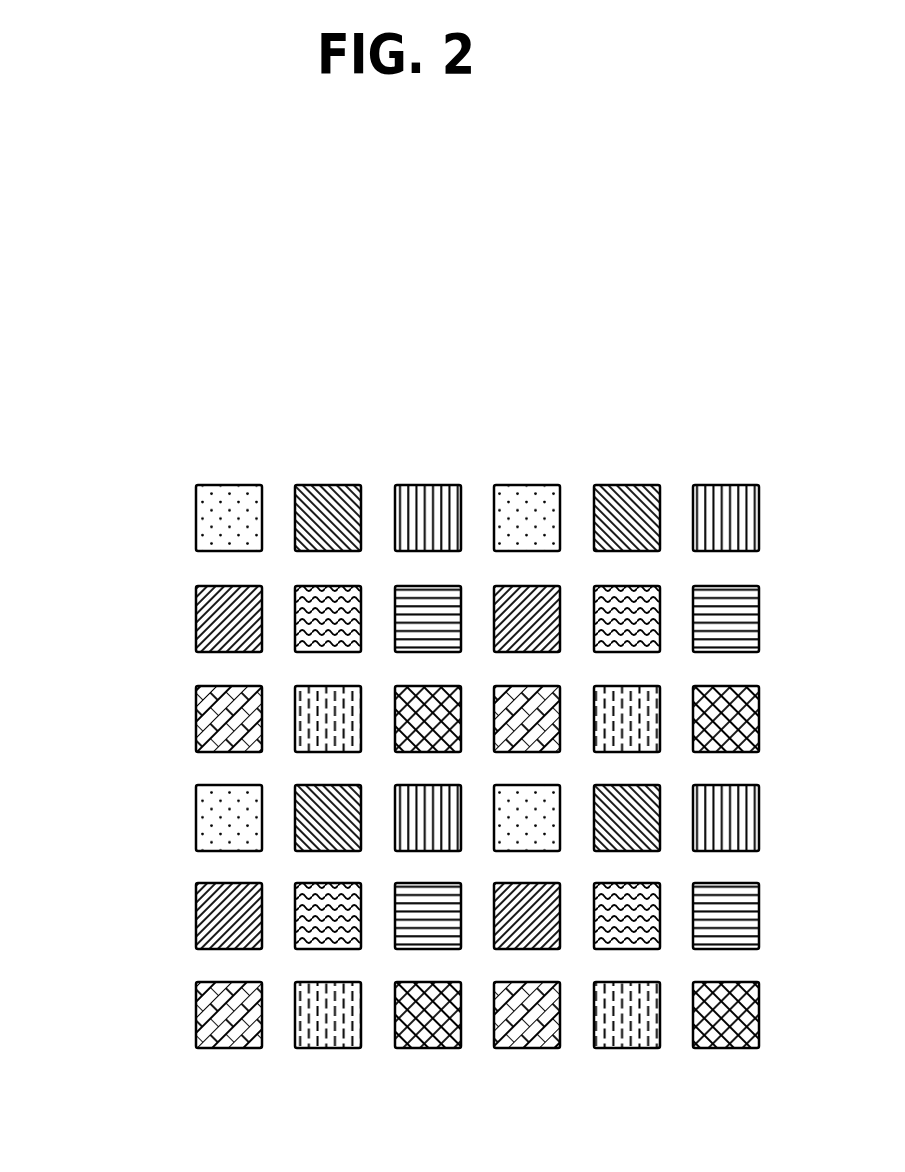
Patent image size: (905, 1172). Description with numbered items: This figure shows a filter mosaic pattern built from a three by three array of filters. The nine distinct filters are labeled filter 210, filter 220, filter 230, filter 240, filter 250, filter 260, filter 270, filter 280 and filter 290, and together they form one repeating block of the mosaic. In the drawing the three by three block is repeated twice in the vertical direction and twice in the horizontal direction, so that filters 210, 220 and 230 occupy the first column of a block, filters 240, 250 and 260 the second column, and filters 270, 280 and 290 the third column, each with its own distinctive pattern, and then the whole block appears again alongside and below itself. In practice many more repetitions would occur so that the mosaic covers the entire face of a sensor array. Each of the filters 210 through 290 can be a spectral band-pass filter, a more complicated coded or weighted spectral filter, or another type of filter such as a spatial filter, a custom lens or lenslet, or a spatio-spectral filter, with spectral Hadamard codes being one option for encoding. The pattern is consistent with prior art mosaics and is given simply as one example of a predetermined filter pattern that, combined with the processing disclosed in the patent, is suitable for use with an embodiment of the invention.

The filter 210 is at (210, 486).
The filter 220 is at (213, 587).
The filter 230 is at (210, 687).
The filter 240 is at (314, 486).
The filter 250 is at (361, 618).
The filter 260 is at (361, 717).
The filter 270 is at (414, 486).
The filter 280 is at (461, 618).
The filter 290 is at (461, 717).